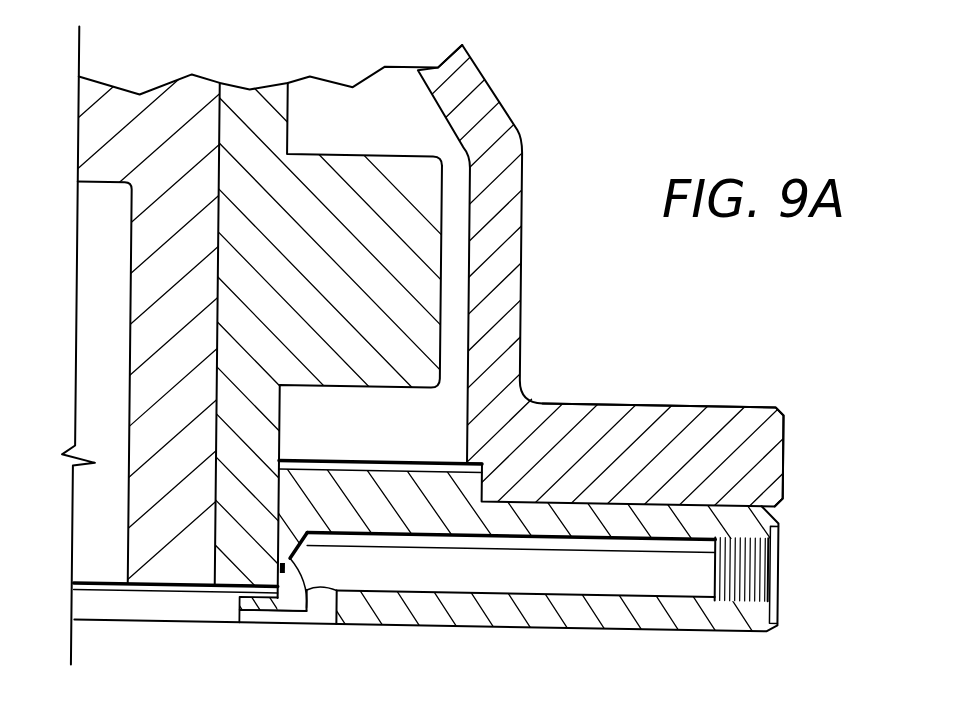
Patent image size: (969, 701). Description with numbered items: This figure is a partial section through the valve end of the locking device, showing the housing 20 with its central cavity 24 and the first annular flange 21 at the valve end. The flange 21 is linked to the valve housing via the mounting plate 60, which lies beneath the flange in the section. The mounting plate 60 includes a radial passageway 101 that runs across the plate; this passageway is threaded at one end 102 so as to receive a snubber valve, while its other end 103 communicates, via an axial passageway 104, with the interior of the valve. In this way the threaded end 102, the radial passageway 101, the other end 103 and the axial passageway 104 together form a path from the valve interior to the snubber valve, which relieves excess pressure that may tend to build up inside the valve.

The housing 20 is at (568, 281).
The first annular flange 21 is at (650, 396).
The central cavity 24 is at (380, 138).
The mounting plate 60 is at (469, 625).
The radial passageway 101 is at (468, 587).
The threaded end 102 is at (738, 592).
The other end of radial passageway 103 is at (306, 576).
The axial passageway 104 is at (329, 611).